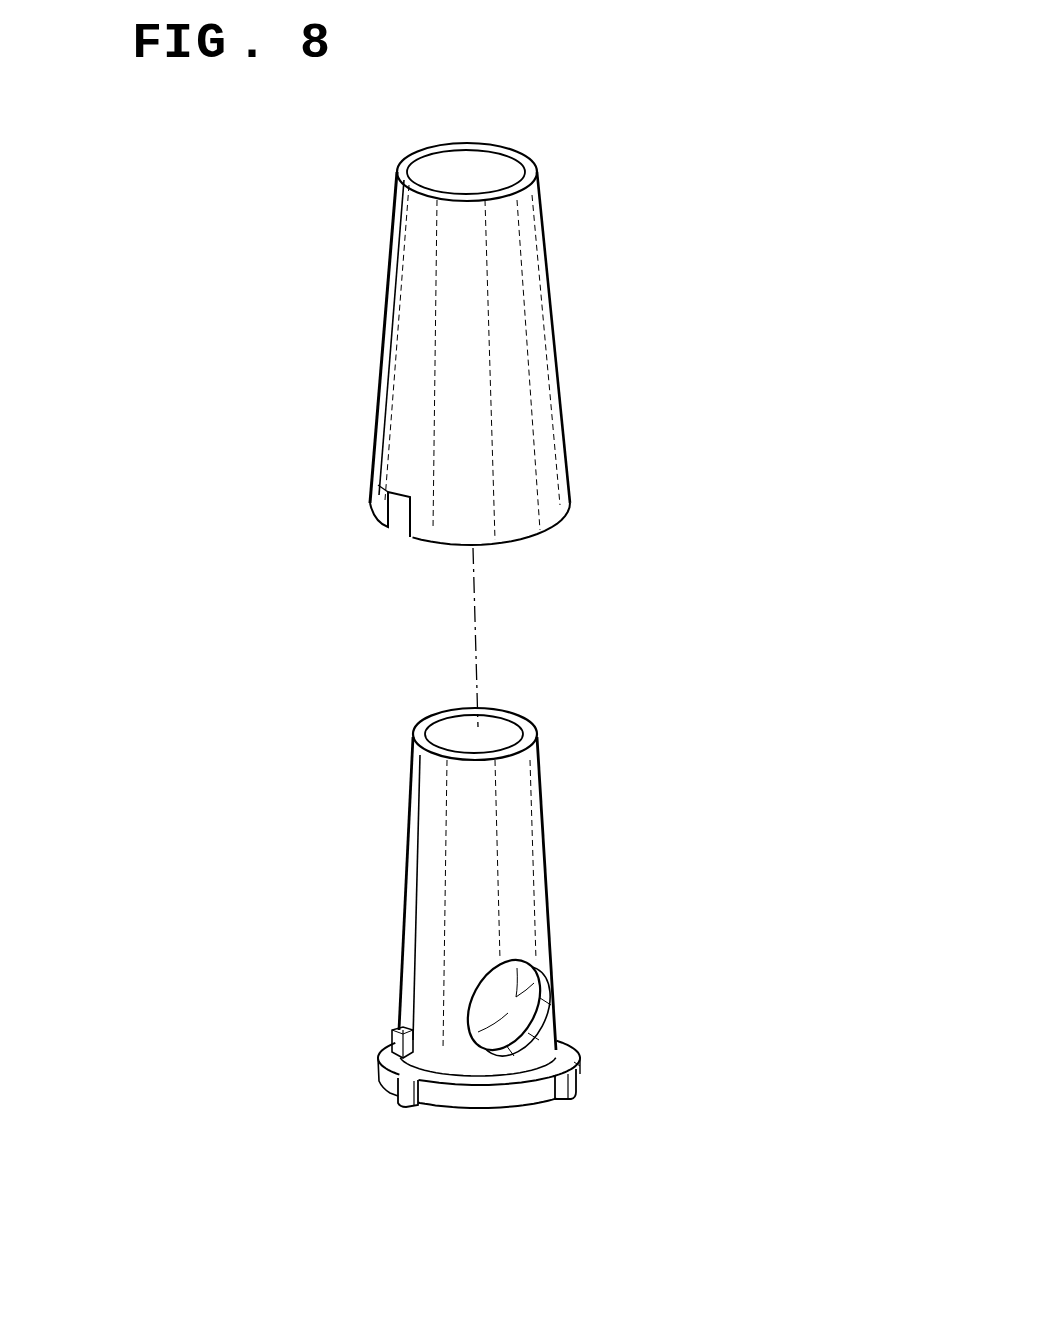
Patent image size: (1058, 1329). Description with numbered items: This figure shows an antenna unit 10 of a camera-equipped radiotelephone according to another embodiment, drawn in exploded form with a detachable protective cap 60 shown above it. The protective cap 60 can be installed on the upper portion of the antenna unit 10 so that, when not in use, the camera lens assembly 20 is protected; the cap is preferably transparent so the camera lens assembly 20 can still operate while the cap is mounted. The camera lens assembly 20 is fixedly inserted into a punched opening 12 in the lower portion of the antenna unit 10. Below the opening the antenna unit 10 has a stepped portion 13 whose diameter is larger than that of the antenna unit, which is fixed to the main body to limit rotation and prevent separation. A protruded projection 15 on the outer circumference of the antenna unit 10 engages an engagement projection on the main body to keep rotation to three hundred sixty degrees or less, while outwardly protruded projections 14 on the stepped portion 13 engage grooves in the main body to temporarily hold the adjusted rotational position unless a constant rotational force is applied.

The protective cap 60 is at (535, 377).
The antenna unit 10 is at (562, 893).
The opening 12 is at (556, 1020).
The camera lens assembly 20 is at (547, 978).
The stepped portion 13 is at (383, 1065).
The projection 15 is at (395, 1028).
The projection 14 is at (561, 1100).